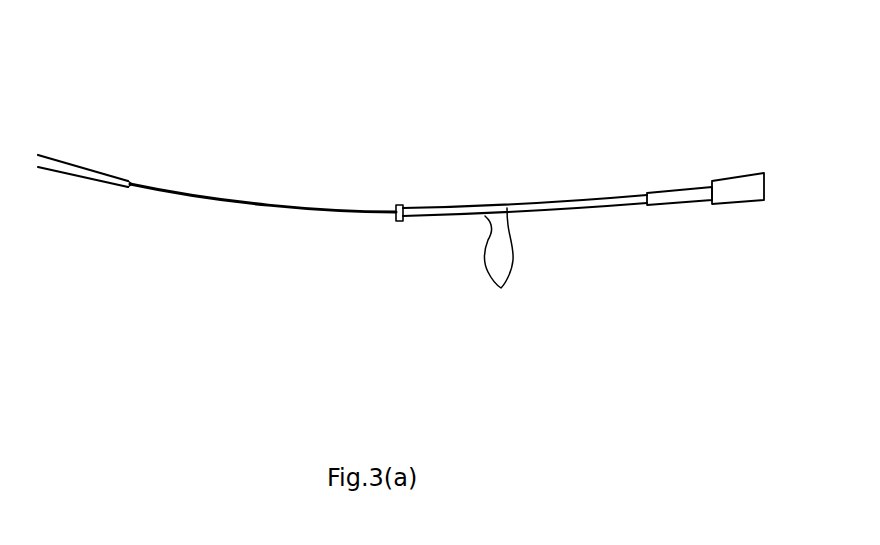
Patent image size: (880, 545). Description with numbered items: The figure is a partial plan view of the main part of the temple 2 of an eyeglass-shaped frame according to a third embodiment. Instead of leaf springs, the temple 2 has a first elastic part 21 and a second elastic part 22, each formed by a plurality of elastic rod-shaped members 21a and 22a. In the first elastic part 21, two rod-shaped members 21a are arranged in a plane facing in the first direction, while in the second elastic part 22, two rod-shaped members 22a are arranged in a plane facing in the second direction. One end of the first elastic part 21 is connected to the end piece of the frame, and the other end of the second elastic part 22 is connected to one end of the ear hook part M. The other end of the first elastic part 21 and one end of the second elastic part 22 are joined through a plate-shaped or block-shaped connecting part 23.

The temple 2 is at (401, 217).
The first elastic part 21 is at (217, 179).
The rod-shaped member 21a is at (203, 202).
The second elastic part 22 is at (557, 192).
The rod-shaped member 22a is at (519, 200).
The connecting part 23 is at (400, 222).
The ear hook part M is at (729, 187).